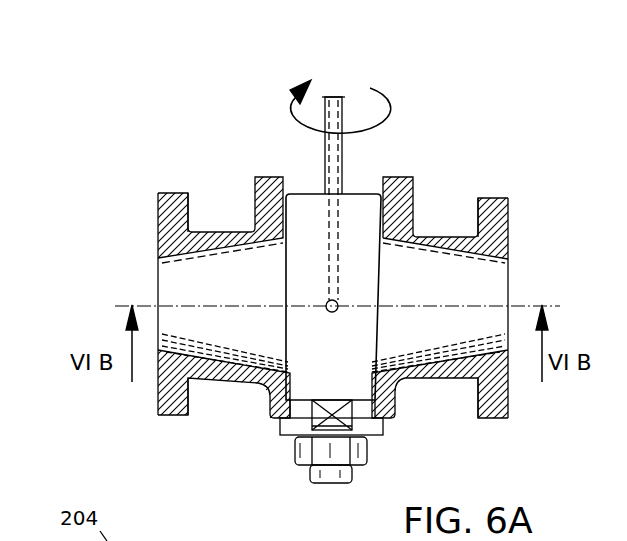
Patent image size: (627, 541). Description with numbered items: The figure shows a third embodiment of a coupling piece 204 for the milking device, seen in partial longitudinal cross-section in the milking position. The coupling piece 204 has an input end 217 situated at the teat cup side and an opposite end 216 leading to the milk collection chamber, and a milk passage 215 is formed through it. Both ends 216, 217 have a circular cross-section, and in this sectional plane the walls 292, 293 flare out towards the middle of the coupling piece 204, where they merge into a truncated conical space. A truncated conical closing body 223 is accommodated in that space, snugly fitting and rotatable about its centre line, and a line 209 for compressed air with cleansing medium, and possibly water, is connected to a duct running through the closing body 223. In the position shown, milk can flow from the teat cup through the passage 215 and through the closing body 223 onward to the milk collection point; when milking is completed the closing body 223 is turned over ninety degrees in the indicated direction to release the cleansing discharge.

The coupling piece 204 is at (126, 160).
The line 209 is at (340, 160).
The milk passage 215 is at (461, 293).
The end leading to the milk collection chamber 216 is at (509, 229).
The input end 217 is at (165, 230).
The closing body 223 is at (360, 202).
The wall 292 is at (220, 238).
The wall 293 is at (447, 235).